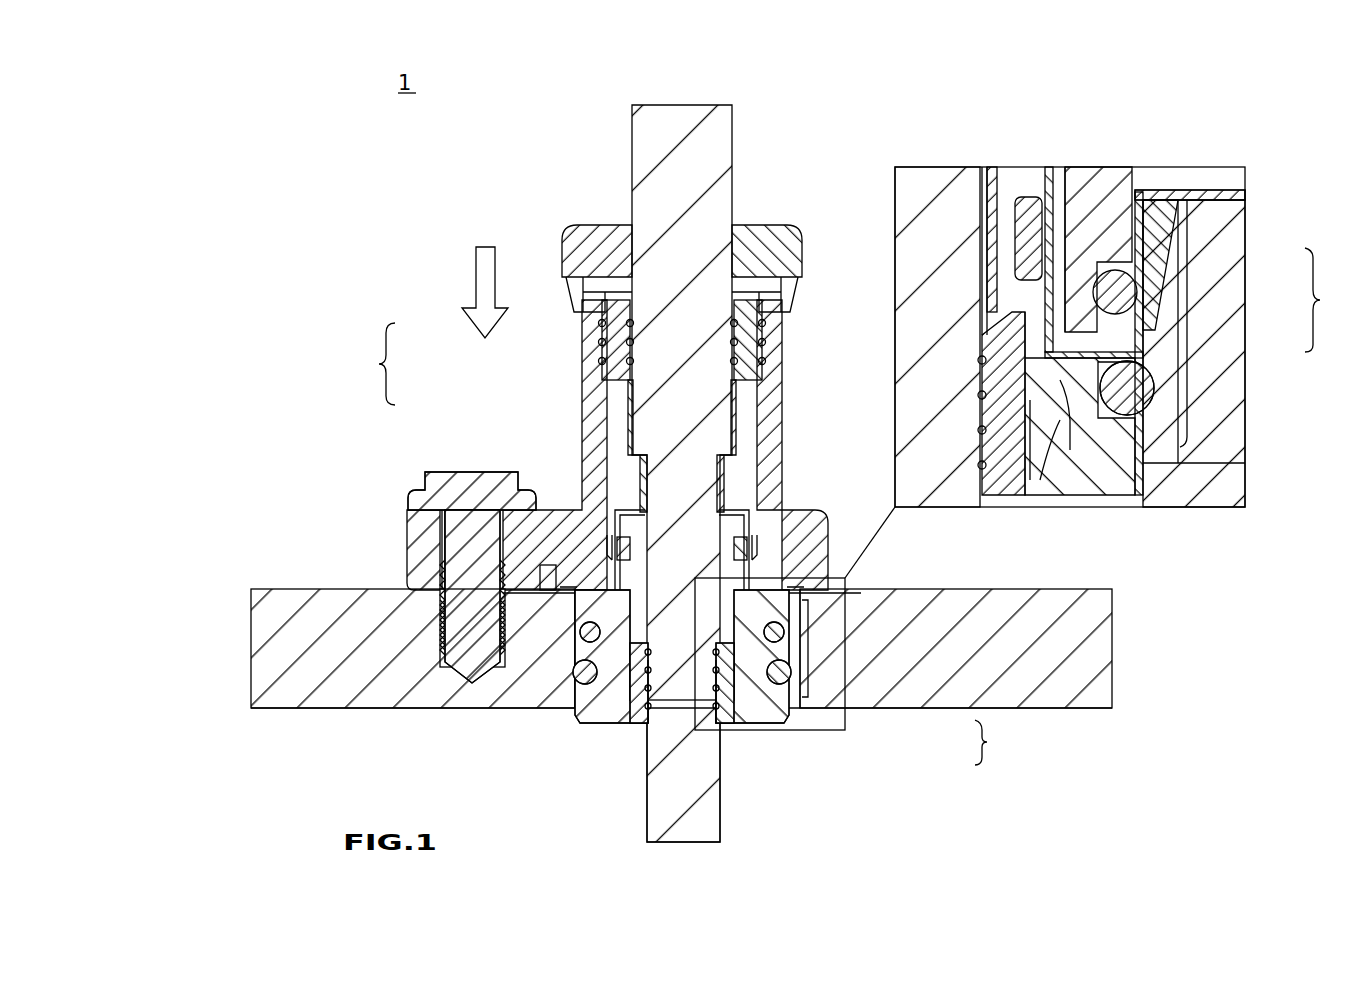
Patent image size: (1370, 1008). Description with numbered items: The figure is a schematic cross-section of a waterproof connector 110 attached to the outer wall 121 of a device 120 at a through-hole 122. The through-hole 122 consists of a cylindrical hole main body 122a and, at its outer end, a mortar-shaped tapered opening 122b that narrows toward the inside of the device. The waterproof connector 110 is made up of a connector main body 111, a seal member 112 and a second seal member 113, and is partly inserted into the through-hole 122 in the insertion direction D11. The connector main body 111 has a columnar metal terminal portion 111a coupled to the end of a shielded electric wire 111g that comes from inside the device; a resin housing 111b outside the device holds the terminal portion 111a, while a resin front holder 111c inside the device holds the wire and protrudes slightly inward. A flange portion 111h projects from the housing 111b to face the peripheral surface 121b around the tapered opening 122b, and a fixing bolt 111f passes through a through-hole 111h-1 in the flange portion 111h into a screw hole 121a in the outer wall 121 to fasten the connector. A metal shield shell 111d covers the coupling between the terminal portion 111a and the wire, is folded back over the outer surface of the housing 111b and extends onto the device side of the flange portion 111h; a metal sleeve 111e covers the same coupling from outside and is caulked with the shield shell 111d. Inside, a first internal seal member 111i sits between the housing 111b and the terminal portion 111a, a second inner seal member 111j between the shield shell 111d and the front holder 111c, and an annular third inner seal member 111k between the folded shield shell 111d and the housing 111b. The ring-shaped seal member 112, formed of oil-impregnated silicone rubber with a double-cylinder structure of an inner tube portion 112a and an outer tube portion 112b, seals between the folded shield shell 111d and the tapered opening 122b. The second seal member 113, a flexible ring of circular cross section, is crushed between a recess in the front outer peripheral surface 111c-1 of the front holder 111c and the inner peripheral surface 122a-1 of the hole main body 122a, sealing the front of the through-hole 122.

The waterproof connector 110 is at (379, 364).
The connector main body 111 is at (548, 243).
The terminal portion 111a is at (712, 142).
The housing 111b is at (772, 340).
The front holder 111c is at (770, 700).
The front outer peripheral surface 111c-1 is at (1050, 430).
The shield shell 111d is at (745, 455).
The sleeve 111e is at (735, 395).
The fixing bolt 111f is at (468, 472).
The shielded electric wire 111g is at (690, 828).
The flange portion 111h is at (407, 548).
The through-hole 111h-1 is at (443, 515).
The first internal seal member 111i is at (616, 300).
The second inner seal member 111j is at (615, 537).
The third inner seal member 111k is at (640, 700).
The seal member 112 is at (550, 565).
The inner tube portion 112a is at (1155, 200).
The outer tube portion 112b is at (1200, 190).
The second seal member 113 is at (605, 695).
The device 120 is at (250, 645).
The outer wall 121 is at (305, 620).
The screw hole 121a is at (455, 680).
The peripheral surface 121b is at (530, 610).
The through-hole 122 is at (1168, 506).
The hole main body 122a is at (795, 676).
The inner peripheral surface 122a-1 is at (1140, 395).
The tapered opening 122b is at (790, 636).
The insertion direction D11 is at (476, 275).